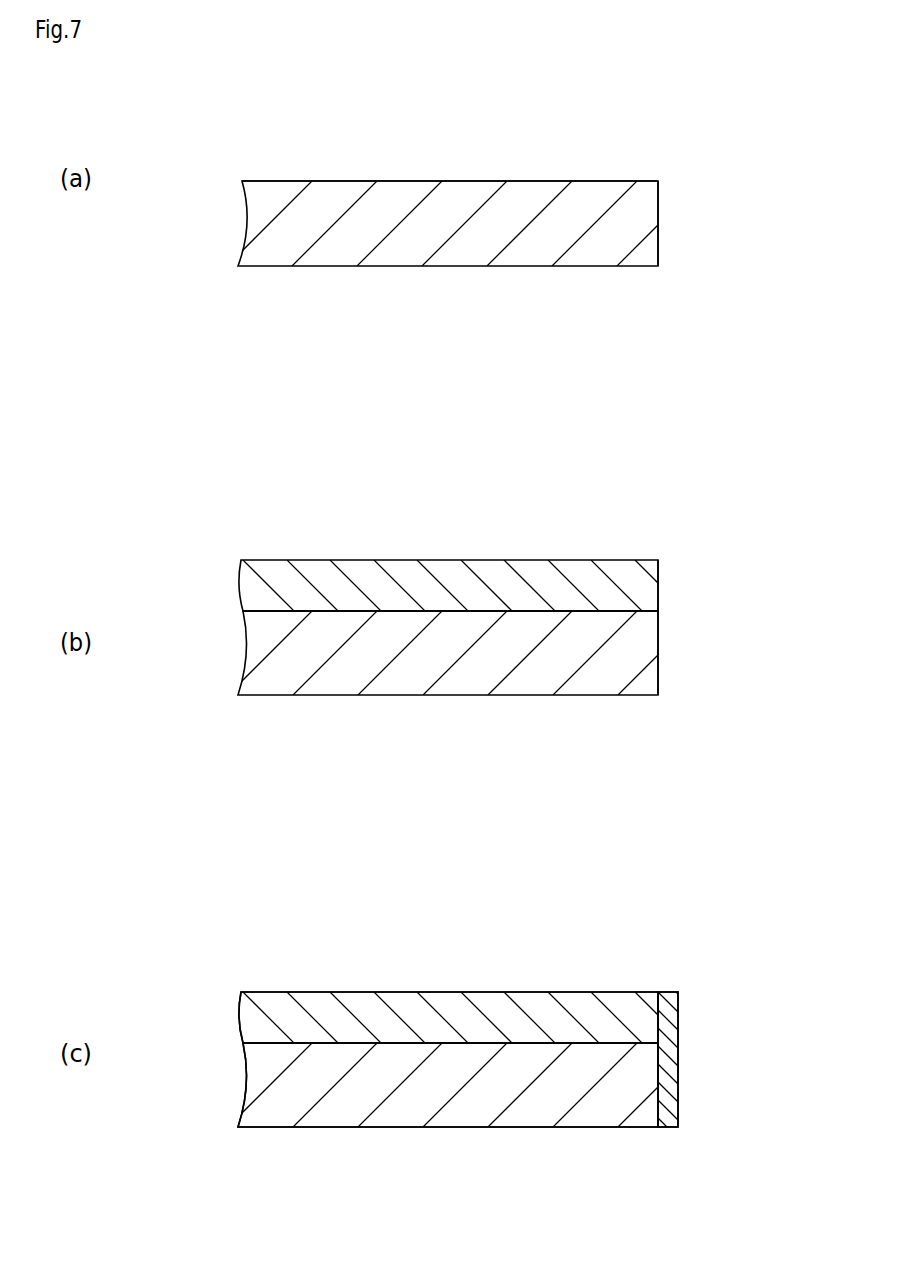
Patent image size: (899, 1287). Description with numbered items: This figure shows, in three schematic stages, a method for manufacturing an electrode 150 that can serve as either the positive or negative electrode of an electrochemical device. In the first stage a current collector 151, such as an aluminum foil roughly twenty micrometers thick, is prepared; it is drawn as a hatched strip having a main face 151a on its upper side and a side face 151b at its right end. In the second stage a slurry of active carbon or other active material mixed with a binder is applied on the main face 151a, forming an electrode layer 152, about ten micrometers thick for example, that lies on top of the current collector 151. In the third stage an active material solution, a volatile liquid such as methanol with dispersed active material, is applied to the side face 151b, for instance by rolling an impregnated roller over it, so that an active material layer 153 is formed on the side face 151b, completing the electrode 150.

The electrode 150 is at (662, 938).
The current collector 151 is at (463, 247).
The main face 151a is at (567, 181).
The side face 151b is at (658, 208).
The electrode layer 152 is at (465, 570).
The active material layer 153 is at (665, 1080).